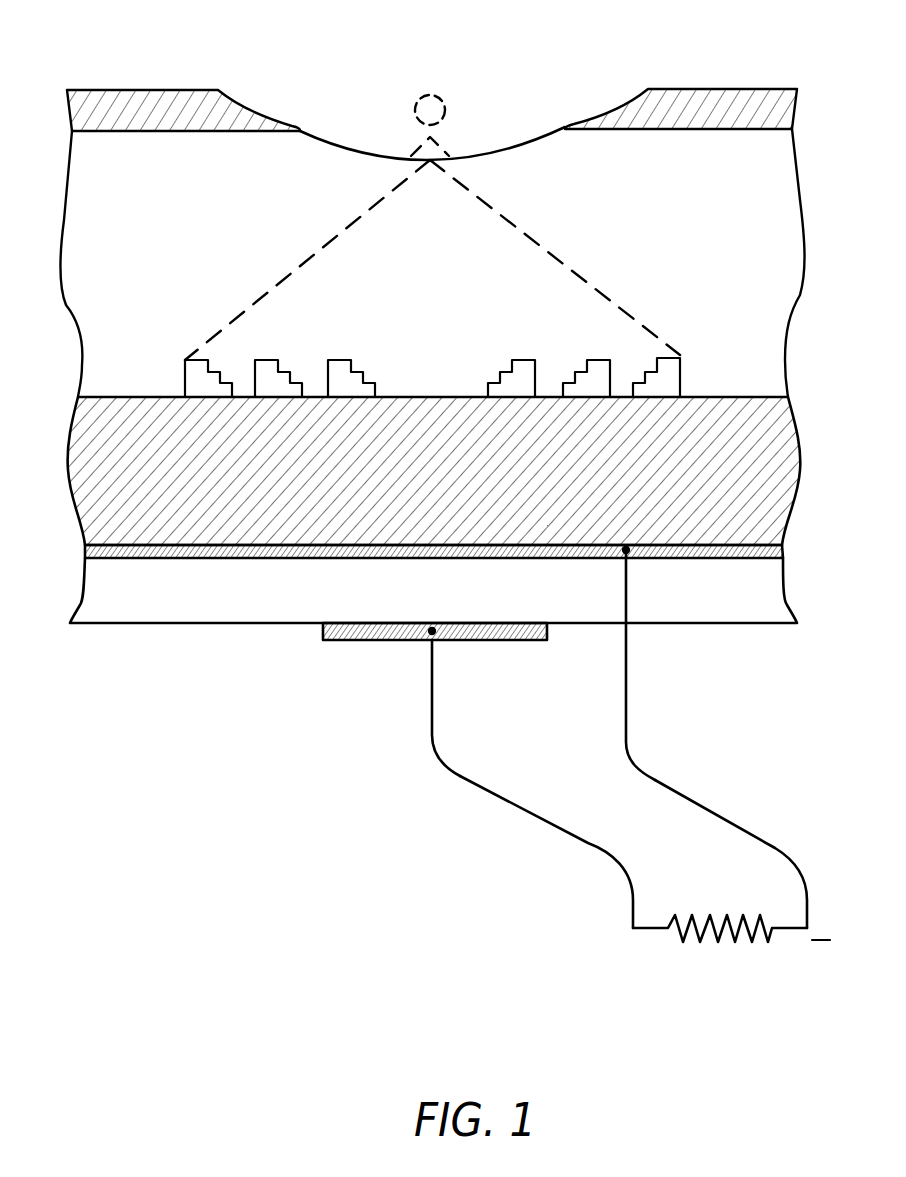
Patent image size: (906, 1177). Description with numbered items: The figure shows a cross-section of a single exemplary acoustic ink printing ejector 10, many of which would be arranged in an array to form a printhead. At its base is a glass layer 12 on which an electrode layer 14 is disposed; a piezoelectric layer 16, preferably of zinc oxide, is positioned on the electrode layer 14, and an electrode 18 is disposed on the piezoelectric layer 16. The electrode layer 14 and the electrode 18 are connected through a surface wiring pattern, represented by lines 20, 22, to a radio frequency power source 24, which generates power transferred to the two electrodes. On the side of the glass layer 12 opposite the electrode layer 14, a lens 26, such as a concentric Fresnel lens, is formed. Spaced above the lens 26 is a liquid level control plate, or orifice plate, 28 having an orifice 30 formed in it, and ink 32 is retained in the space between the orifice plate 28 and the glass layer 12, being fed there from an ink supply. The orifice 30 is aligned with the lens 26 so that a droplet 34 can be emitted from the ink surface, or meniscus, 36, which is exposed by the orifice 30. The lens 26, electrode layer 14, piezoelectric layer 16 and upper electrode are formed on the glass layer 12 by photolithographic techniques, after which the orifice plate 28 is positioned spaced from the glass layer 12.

The acoustic ink printing ejector 10 is at (539, 86).
The glass layer 12 is at (434, 471).
The electrode layer 14 is at (712, 560).
The piezoelectric layer 16 is at (214, 626).
The electrode 18 is at (395, 645).
The surface wiring line 20 is at (645, 758).
The surface wiring line 22 is at (722, 812).
The radio frequency power source 24 is at (714, 955).
The lens 26 is at (688, 360).
The liquid level control plate 28 is at (711, 89).
The orifice 30 is at (385, 128).
The ink 32 is at (432, 248).
The droplet 34 is at (433, 95).
The ink surface 36 is at (372, 160).